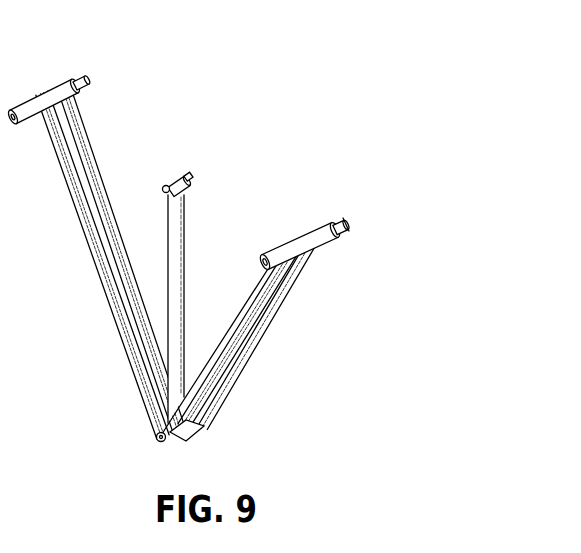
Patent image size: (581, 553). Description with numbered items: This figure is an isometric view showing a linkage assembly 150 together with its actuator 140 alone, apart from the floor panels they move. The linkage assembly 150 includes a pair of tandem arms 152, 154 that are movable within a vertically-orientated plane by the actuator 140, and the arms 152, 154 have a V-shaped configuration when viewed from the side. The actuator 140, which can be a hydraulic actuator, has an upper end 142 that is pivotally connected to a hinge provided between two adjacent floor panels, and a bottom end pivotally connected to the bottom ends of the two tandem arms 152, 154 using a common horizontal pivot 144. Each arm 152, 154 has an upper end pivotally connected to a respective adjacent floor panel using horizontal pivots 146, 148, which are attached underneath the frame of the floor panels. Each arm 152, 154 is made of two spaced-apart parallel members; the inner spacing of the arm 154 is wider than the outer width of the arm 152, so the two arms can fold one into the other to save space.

The actuator 140 is at (178, 238).
The upper end 142 is at (178, 173).
The common horizontal pivot 144 is at (157, 438).
The horizontal pivot 146 is at (50, 90).
The horizontal pivot 148 is at (303, 237).
The linkage assembly 150 is at (178, 240).
The arm 152 is at (116, 298).
The arm 154 is at (262, 320).